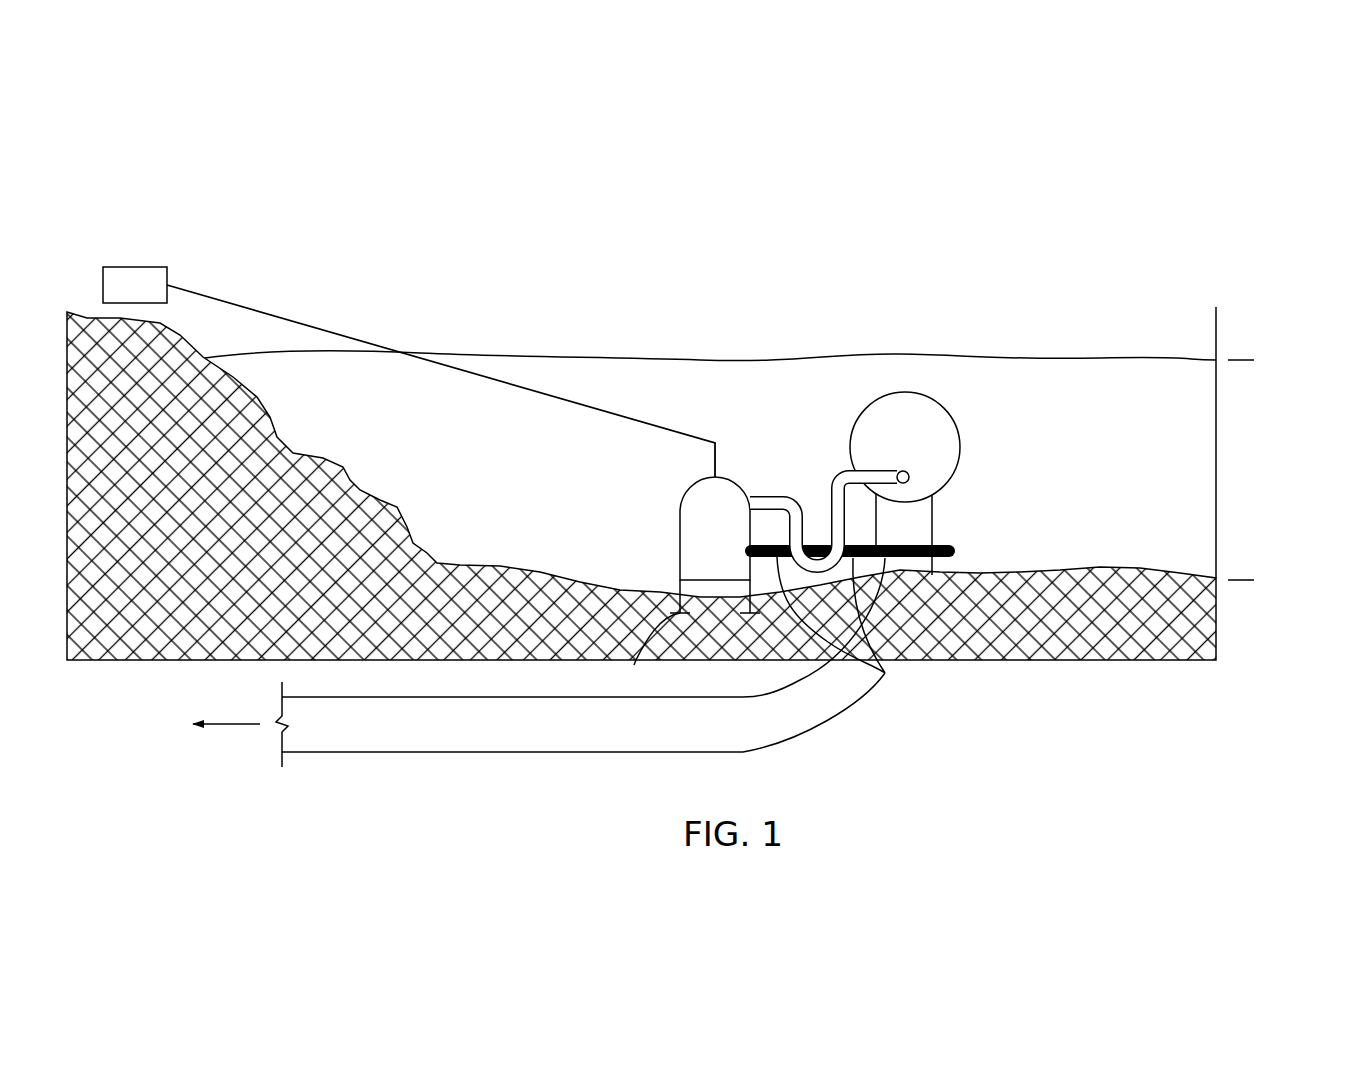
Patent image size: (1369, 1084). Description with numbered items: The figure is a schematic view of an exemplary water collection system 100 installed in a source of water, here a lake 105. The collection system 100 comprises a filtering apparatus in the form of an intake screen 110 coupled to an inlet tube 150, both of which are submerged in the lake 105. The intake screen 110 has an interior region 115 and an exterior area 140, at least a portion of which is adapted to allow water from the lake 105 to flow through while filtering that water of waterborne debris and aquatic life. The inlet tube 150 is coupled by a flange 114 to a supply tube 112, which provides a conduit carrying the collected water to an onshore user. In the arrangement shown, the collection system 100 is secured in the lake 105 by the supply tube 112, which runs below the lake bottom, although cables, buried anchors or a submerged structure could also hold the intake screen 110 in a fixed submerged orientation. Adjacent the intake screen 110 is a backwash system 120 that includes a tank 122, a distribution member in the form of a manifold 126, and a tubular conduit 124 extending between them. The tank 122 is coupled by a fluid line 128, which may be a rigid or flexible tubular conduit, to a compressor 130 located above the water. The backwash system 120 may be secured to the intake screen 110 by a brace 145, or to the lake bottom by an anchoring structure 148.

The collection system 100 is at (711, 469).
The lake 105 is at (422, 433).
The intake screen 110 is at (904, 448).
The supply tube 112 is at (652, 738).
The flange 114 is at (958, 549).
The interior region 115 is at (947, 465).
The backwash system 120 is at (725, 511).
The tank 122 is at (695, 540).
The conduit 124 is at (795, 496).
The manifold 126 is at (891, 469).
The fluid line 128 is at (658, 421).
The compressor 130 is at (130, 267).
The exterior area 140 is at (938, 391).
The brace 145 is at (885, 673).
The anchoring structure 148 is at (643, 652).
The inlet tube 150 is at (949, 527).